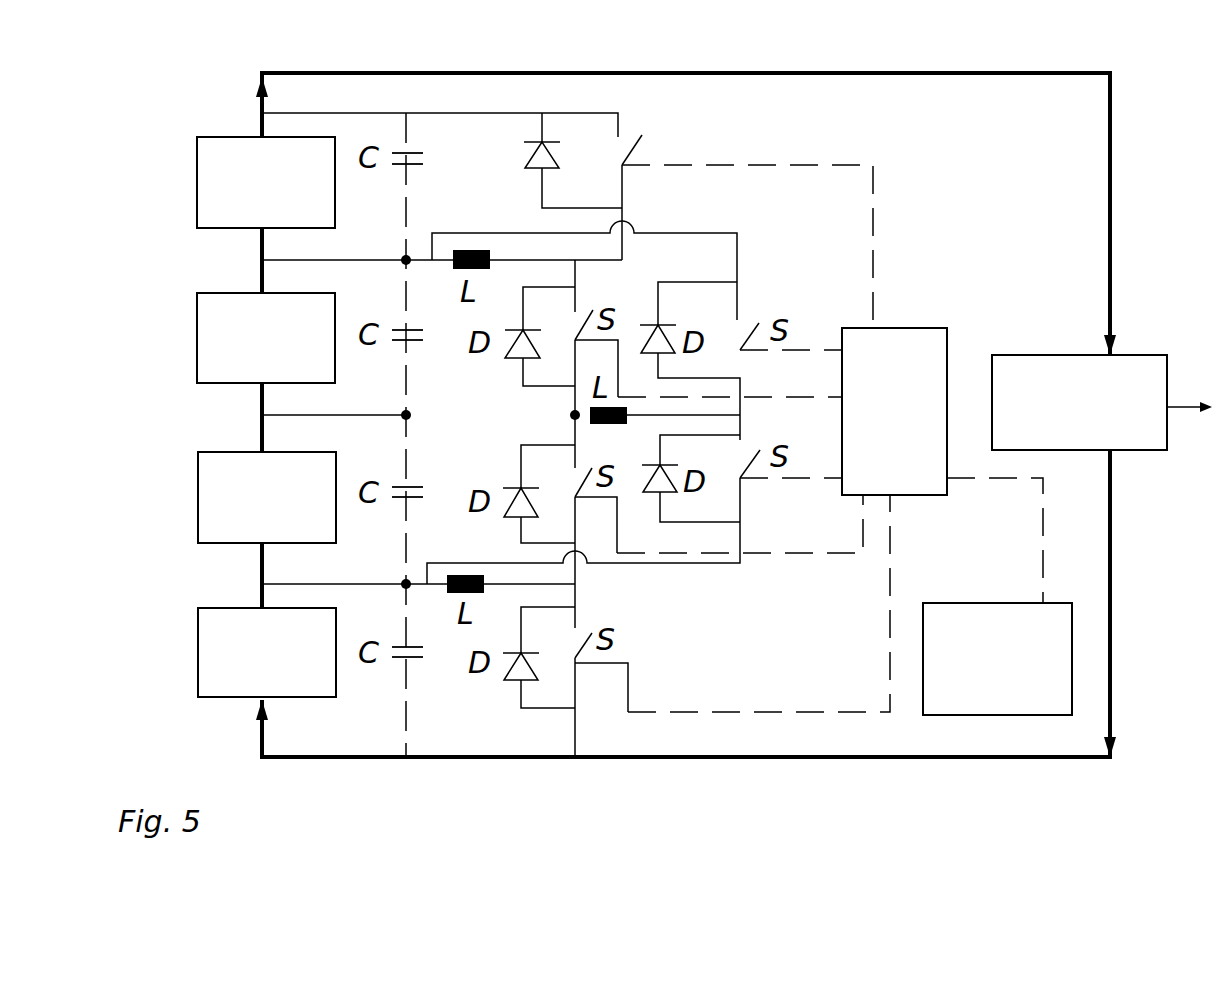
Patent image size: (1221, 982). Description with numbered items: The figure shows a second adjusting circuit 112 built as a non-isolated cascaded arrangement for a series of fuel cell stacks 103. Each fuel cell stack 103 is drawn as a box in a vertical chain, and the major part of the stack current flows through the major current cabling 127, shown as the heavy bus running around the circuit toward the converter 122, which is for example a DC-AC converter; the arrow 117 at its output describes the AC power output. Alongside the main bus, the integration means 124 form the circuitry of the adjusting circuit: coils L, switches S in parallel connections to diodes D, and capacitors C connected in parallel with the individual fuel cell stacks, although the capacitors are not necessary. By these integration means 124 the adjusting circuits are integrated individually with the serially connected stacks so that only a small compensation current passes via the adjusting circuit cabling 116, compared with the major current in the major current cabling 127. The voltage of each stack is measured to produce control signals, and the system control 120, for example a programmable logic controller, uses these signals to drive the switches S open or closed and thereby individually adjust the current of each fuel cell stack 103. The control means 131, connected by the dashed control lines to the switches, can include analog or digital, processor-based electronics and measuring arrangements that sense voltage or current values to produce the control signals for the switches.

The fuel cell stack 103 is at (197, 182).
The second adjusting circuit 112 is at (545, 786).
The adjusting circuit cabling 116 is at (372, 113).
The AC power output 117 is at (1167, 413).
The system control 120 is at (990, 603).
The converter 122 is at (1146, 355).
The integration means 124 is at (847, 282).
The major current cabling 127 is at (258, 91).
The control means 131 is at (933, 328).